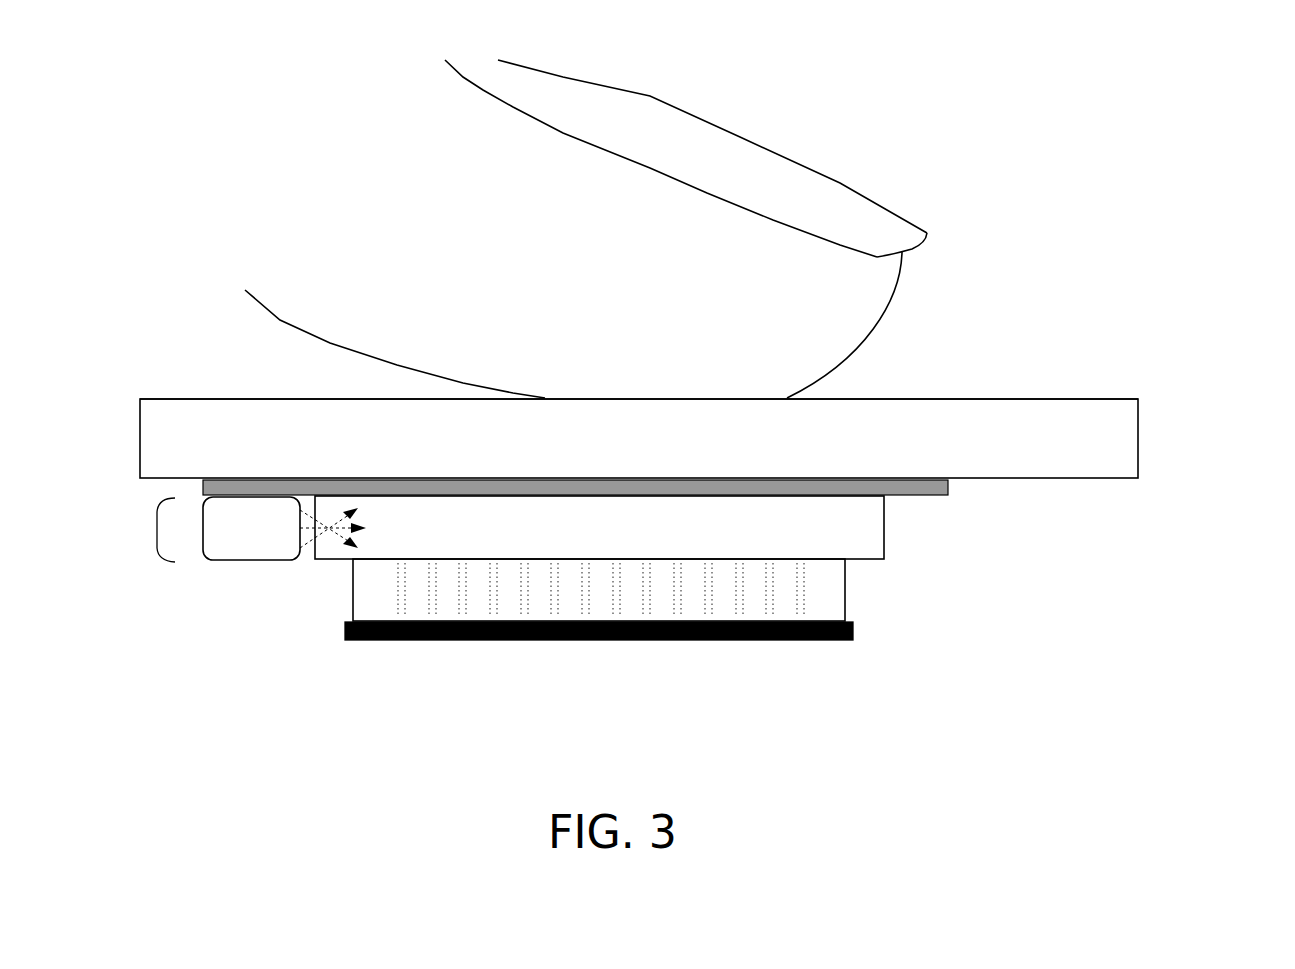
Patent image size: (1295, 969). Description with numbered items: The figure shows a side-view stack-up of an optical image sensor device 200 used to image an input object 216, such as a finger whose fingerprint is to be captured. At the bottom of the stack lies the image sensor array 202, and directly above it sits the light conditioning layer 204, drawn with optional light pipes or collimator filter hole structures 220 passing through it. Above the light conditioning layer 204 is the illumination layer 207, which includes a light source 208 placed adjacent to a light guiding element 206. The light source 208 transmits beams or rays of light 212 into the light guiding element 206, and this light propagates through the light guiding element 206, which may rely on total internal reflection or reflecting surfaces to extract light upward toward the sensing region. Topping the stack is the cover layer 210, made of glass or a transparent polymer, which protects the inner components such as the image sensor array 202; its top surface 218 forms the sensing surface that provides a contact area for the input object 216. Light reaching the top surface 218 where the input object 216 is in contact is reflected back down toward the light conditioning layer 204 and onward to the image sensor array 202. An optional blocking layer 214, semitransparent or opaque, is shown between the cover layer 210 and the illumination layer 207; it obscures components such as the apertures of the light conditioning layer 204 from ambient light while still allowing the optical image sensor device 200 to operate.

The optical image sensor device 200 is at (1192, 573).
The image sensor array 202 is at (856, 640).
The light conditioning layer 204 is at (352, 588).
The light guiding element 206 is at (888, 550).
The illumination layer 207 is at (156, 530).
The light source 208 is at (203, 558).
The cover layer 210 is at (1138, 437).
The rays of light 212 is at (337, 517).
The blocking layer 214 is at (952, 492).
The input object 216 is at (868, 350).
The top surface 218 is at (961, 398).
The collimator filter hole structures 220 is at (490, 585).